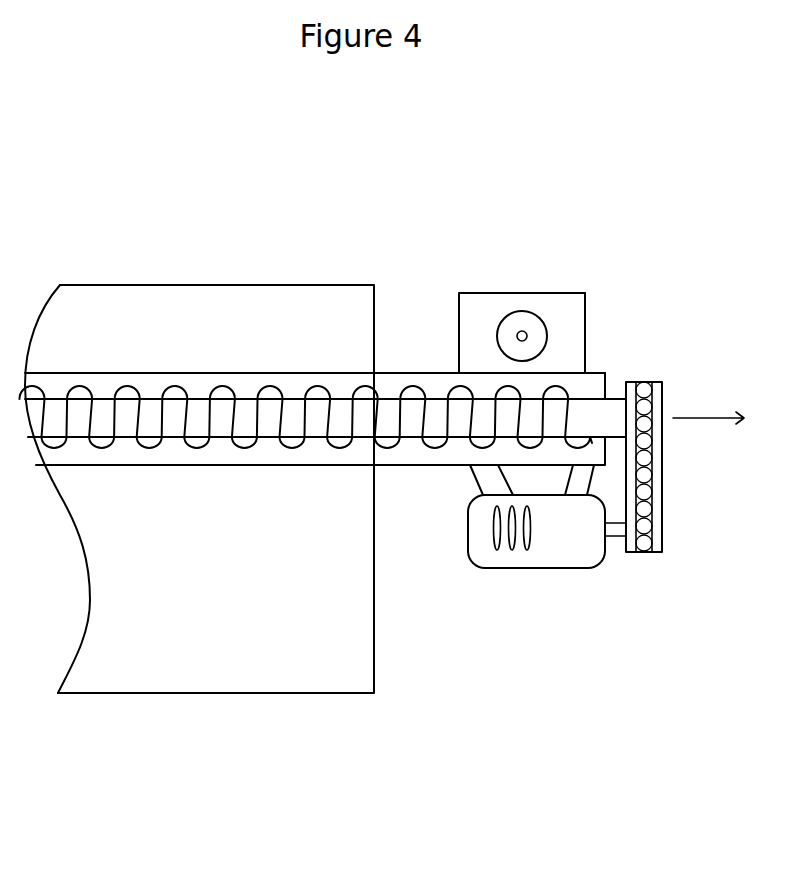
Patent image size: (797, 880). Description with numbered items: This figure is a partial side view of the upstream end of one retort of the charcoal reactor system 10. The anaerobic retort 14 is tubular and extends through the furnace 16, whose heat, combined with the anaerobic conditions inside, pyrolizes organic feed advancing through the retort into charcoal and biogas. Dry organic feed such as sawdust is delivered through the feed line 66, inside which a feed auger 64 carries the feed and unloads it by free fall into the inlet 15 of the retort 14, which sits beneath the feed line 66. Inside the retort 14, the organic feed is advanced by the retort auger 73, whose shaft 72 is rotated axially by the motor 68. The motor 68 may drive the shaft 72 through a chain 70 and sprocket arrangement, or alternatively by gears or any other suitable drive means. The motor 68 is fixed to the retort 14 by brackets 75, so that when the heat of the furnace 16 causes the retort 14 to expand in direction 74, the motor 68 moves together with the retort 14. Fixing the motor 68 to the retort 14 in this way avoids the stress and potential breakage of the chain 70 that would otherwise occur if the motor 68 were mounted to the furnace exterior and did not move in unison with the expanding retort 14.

The charcoal reactor system 10 is at (349, 862).
The anaerobic retort 14 is at (412, 372).
The inlet 15 is at (592, 337).
The furnace 16 is at (200, 285).
The feed auger 64 is at (545, 318).
The feed line 66 is at (500, 293).
The motor 68 is at (573, 568).
The chain 70 is at (642, 552).
The shaft 72 is at (610, 397).
The retort auger 73 is at (423, 466).
The direction 74 is at (724, 420).
The bracket 75 is at (472, 475).